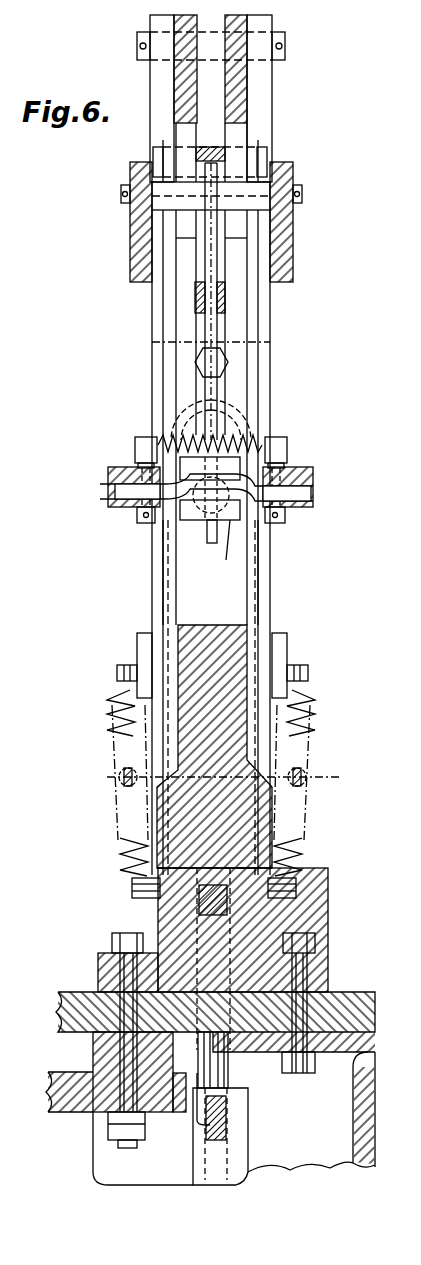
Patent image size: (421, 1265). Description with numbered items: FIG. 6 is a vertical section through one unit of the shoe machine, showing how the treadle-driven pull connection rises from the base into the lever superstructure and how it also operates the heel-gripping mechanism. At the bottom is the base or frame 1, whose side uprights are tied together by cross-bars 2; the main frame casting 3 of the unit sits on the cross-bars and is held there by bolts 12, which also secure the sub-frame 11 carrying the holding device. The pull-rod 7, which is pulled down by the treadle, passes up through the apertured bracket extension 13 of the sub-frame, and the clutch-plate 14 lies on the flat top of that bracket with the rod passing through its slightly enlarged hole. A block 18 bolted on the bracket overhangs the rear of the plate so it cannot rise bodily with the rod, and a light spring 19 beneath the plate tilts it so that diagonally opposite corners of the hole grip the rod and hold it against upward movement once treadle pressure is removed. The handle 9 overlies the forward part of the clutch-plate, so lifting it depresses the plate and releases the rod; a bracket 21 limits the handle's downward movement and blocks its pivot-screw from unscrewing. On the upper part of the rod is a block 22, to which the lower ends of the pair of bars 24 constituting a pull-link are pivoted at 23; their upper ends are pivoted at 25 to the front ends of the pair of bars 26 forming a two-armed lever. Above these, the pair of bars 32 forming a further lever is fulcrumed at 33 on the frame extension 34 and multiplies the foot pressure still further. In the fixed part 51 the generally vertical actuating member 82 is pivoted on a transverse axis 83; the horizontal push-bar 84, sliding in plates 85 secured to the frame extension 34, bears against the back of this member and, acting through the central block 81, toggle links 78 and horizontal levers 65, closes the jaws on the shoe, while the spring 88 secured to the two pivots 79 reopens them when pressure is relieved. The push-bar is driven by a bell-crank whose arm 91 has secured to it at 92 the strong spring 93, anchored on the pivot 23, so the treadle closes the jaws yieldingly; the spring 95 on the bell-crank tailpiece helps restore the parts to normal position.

The base or frame 1 is at (376, 1078).
The cross-bars 2 is at (352, 1000).
The main frame casting 3 is at (262, 935).
The pull-rod 7 is at (226, 1062).
The handle 9 is at (178, 1088).
The sub-frame 11 is at (91, 1072).
The bolts 12 is at (118, 968).
The bracket extension 13 is at (250, 1153).
The clutch-plate 14 is at (250, 1108).
The block 18 is at (203, 1136).
The light spring 19 is at (212, 1152).
The bracket 21 is at (164, 1118).
The block 22 is at (186, 900).
The pivot 23 is at (130, 886).
The bars constituting a pull-link 24 is at (172, 570).
The pivot 25 is at (258, 150).
The bars forming a two-armed lever 26 is at (238, 134).
The bars forming a lever 32 is at (232, 78).
The fulcrum 33 is at (286, 44).
The frame extension 34 is at (262, 88).
The fixed part 51 is at (128, 222).
The horizontal levers 65 is at (108, 482).
The toggle links 78 is at (108, 508).
The pivots 79 is at (134, 440).
The central block 81 is at (228, 553).
The actuating arm or member 82 is at (212, 328).
The transverse axis 83 is at (303, 200).
The push-bar 84 is at (178, 527).
The plates 85 is at (266, 340).
The spring 88 is at (228, 440).
The arm of bell-crank lever 91 is at (136, 637).
The spring attachment point 92 is at (116, 673).
The strong spring 93 is at (308, 718).
The spring 95 is at (118, 780).